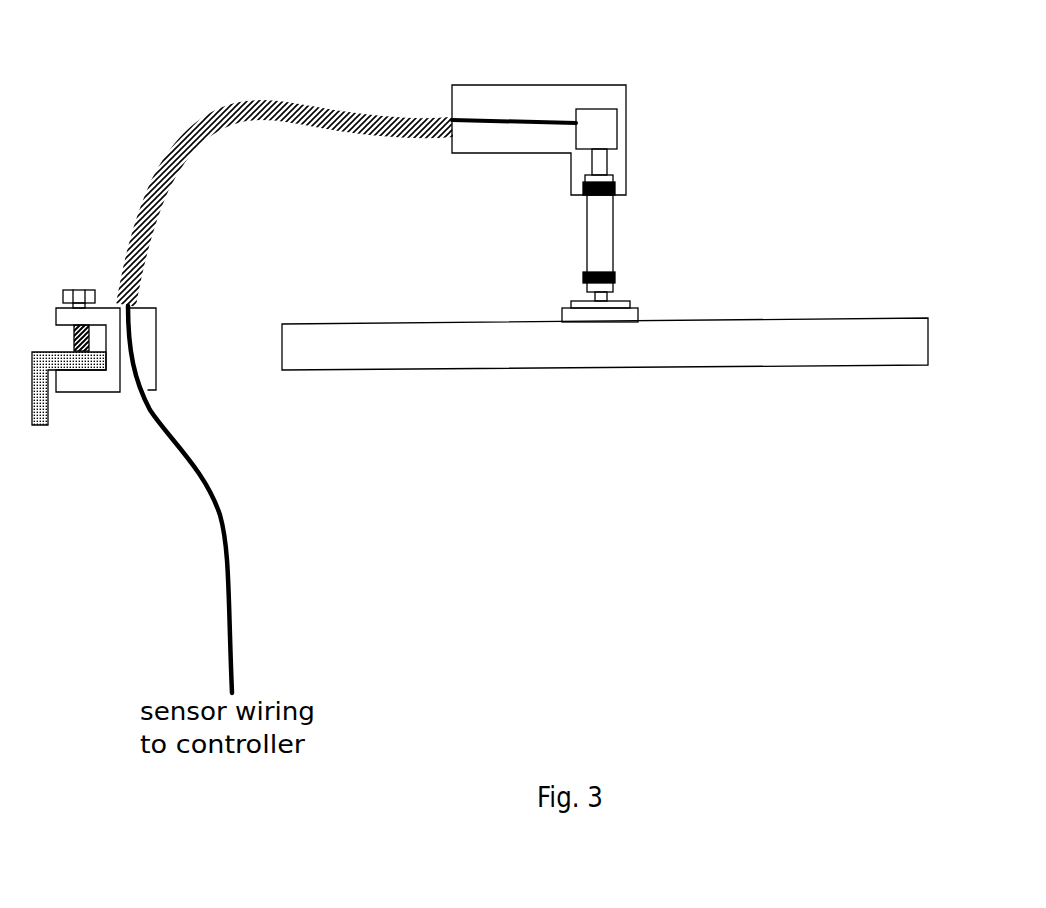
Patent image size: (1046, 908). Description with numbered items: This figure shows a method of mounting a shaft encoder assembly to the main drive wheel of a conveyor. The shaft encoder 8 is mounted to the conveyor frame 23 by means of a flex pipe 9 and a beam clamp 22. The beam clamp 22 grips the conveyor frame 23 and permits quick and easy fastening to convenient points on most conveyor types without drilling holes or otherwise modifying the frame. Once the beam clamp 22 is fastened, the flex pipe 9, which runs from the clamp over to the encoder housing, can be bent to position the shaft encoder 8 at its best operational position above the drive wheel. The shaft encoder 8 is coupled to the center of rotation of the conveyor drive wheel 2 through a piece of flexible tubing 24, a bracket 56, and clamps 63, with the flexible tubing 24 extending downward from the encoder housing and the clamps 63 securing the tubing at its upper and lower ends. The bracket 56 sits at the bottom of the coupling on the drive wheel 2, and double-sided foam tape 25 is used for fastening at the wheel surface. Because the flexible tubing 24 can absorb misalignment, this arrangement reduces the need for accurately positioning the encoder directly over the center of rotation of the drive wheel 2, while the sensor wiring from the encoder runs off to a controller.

The conveyor drive wheel 2 is at (385, 377).
The shaft encoder 8 is at (601, 105).
The flex pipe 9 is at (222, 147).
The beam clamp 22 is at (110, 400).
The conveyor frame 23 is at (50, 440).
The flexible tubing 24 is at (625, 227).
The double-sided foam tape 25 is at (645, 314).
The bracket 56 is at (626, 293).
The clamps 63 is at (577, 277).